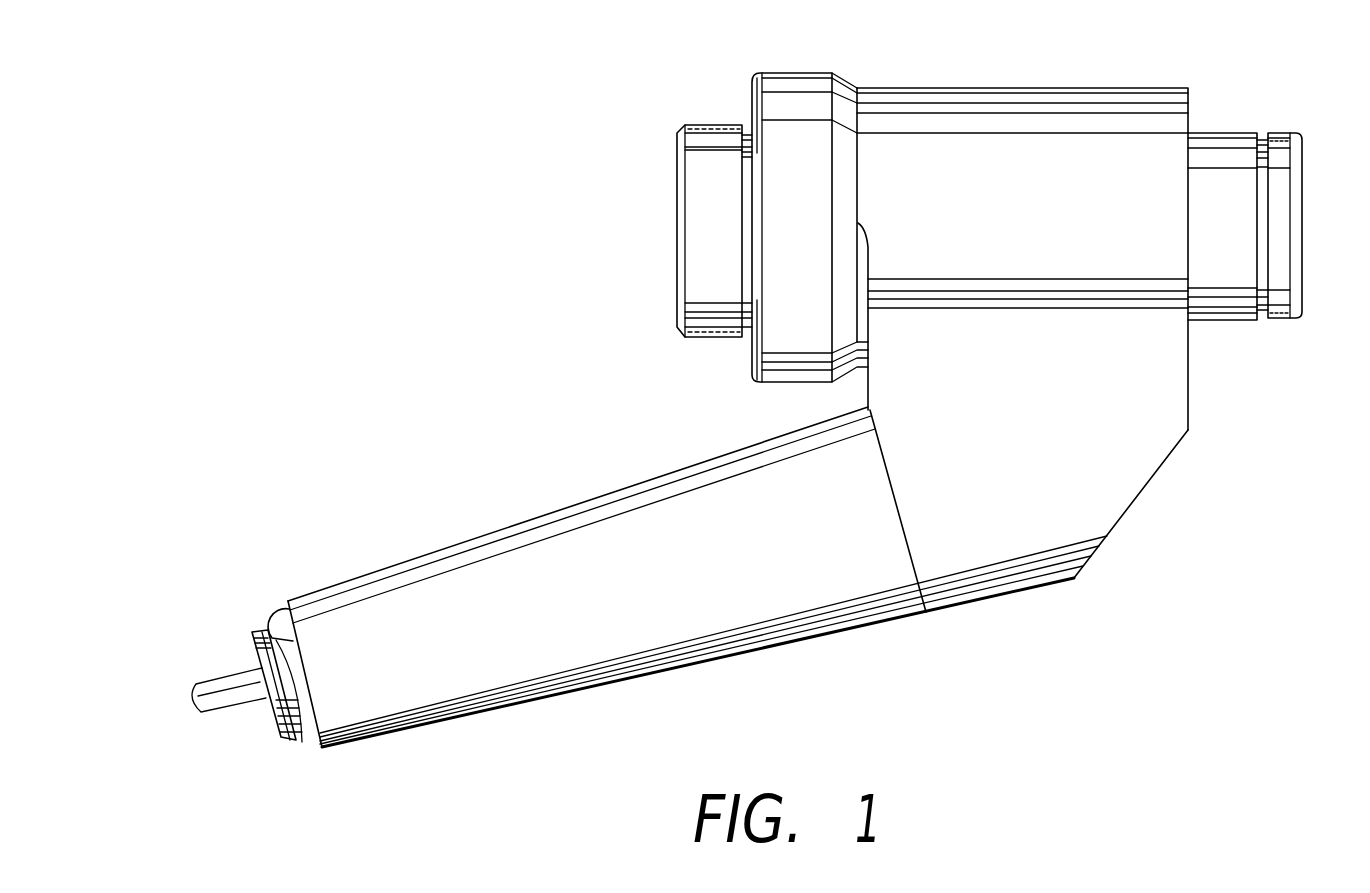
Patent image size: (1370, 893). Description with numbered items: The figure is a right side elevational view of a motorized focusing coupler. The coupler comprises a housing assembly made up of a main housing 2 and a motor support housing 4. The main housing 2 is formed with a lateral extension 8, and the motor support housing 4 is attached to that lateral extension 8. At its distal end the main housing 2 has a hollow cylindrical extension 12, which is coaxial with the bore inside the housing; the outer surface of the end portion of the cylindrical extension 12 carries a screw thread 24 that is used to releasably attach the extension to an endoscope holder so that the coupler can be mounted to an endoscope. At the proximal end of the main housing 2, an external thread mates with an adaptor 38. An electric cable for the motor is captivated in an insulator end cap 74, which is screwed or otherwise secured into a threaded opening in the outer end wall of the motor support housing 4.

The main housing 2 is at (1002, 88).
The motor support housing 4 is at (517, 523).
The lateral extension 8 is at (1130, 475).
The hollow cylindrical extension 12 is at (1218, 132).
The screw thread 24 is at (1276, 130).
The adaptor 38 is at (733, 94).
The insulator end cap 74 is at (275, 610).